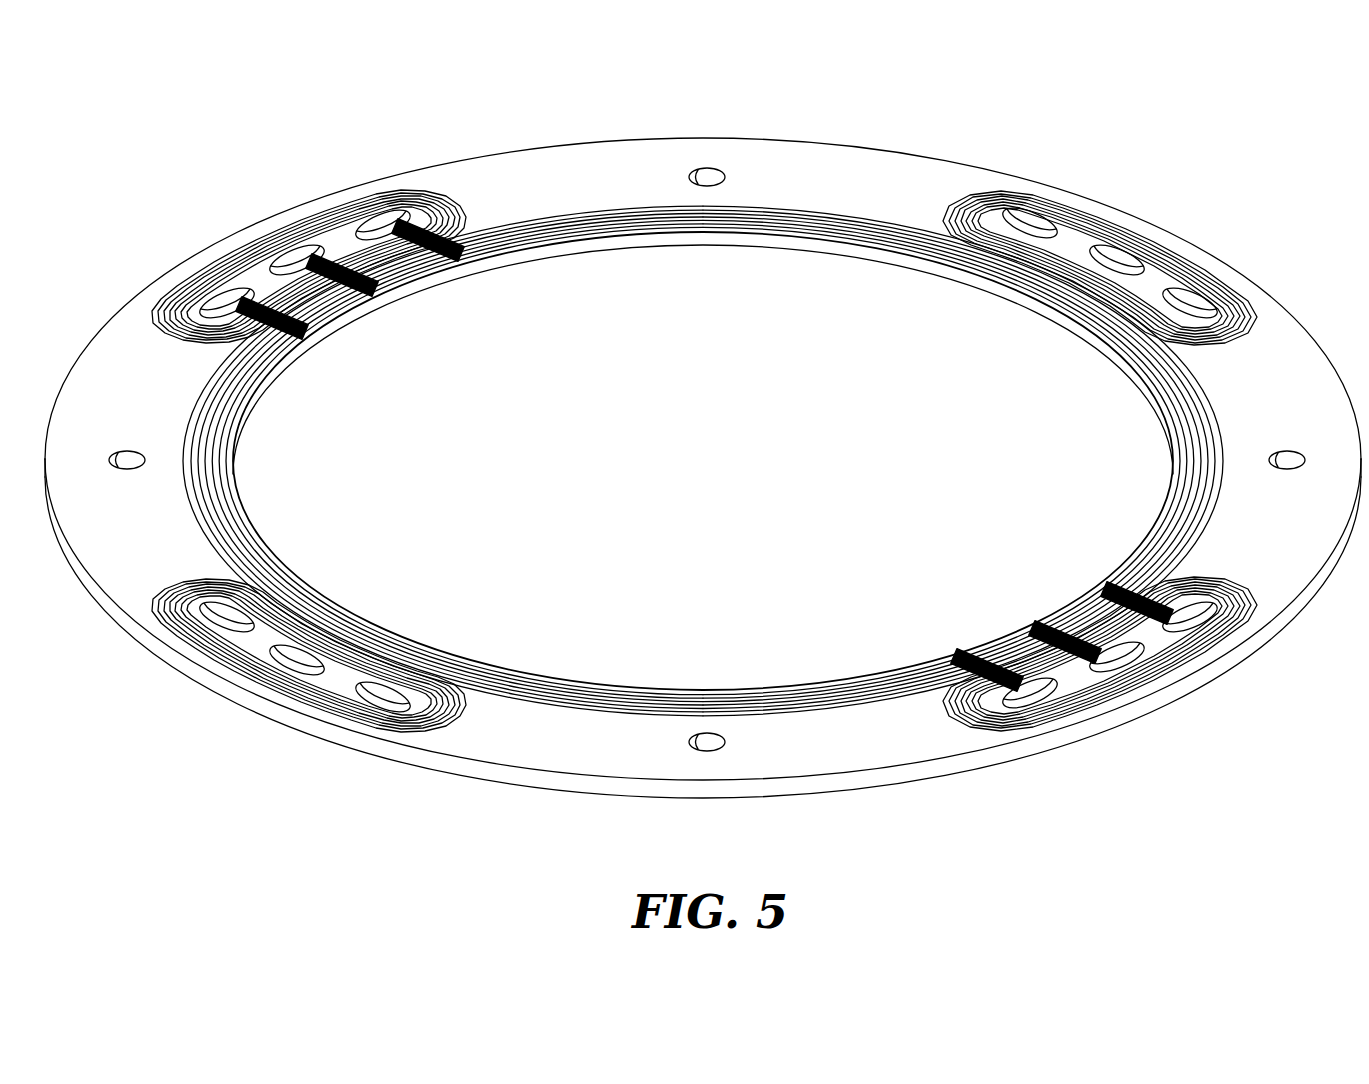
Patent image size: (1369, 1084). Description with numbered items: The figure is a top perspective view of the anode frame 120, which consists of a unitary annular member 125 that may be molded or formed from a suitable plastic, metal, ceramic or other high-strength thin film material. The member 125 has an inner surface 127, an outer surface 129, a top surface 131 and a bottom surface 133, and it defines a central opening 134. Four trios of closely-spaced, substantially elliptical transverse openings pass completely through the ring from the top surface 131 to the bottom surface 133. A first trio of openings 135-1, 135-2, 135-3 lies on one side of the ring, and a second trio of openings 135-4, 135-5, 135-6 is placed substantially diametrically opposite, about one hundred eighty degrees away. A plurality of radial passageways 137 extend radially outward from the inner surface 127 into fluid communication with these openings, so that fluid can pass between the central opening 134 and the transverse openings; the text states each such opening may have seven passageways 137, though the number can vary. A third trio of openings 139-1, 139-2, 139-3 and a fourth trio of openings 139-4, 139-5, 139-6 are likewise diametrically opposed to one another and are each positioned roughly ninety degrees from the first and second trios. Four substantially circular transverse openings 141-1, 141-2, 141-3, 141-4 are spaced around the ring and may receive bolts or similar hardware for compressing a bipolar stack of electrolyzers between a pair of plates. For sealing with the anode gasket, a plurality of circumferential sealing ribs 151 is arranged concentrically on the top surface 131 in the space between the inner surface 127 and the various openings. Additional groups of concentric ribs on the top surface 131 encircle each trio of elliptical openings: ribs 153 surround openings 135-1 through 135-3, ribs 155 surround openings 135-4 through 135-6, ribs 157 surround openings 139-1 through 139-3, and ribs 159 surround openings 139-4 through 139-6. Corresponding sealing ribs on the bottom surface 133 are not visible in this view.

The anode frame 120 is at (294, 794).
The unitary annular member 125 is at (760, 264).
The inner surface 127 is at (1000, 287).
The outer surface 129 is at (108, 614).
The top surface 131 is at (858, 172).
The bottom surface 133 is at (610, 250).
The central opening 134 is at (685, 491).
The transverse opening 135-1 is at (213, 300).
The transverse opening 135-2 is at (292, 257).
The transverse opening 135-3 is at (372, 224).
The transverse opening 135-4 is at (1028, 683).
The transverse opening 135-5 is at (1114, 650).
The transverse opening 135-6 is at (1190, 610).
The radial passageways 137 is at (300, 335).
The transverse opening 139-1 is at (1020, 227).
The transverse opening 139-2 is at (1107, 257).
The transverse opening 139-3 is at (1187, 293).
The transverse opening 139-4 is at (213, 609).
The transverse opening 139-5 is at (283, 655).
The transverse opening 139-6 is at (367, 690).
The circular transverse opening 141-1 is at (707, 168).
The circular transverse opening 141-2 is at (1287, 450).
The circular transverse opening 141-3 is at (707, 733).
The circular transverse opening 141-4 is at (127, 450).
The circumferential sealing ribs 151 is at (205, 460).
The concentric ribs 153 is at (435, 205).
The concentric ribs 155 is at (1224, 590).
The concentric ribs 157 is at (1257, 310).
The concentric ribs 159 is at (477, 677).